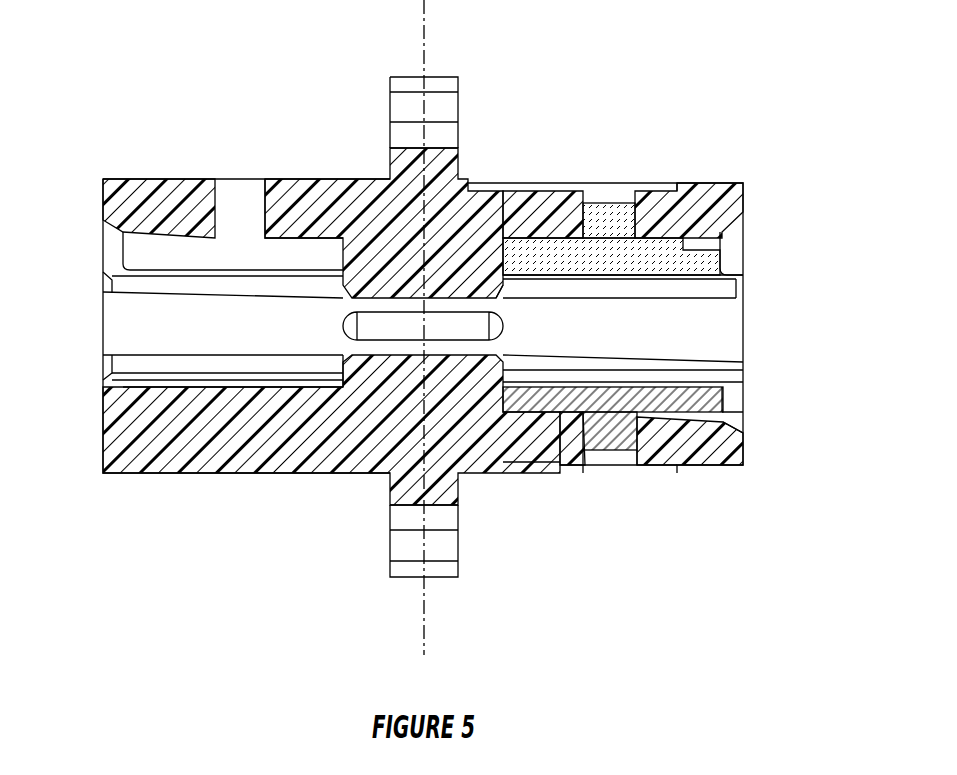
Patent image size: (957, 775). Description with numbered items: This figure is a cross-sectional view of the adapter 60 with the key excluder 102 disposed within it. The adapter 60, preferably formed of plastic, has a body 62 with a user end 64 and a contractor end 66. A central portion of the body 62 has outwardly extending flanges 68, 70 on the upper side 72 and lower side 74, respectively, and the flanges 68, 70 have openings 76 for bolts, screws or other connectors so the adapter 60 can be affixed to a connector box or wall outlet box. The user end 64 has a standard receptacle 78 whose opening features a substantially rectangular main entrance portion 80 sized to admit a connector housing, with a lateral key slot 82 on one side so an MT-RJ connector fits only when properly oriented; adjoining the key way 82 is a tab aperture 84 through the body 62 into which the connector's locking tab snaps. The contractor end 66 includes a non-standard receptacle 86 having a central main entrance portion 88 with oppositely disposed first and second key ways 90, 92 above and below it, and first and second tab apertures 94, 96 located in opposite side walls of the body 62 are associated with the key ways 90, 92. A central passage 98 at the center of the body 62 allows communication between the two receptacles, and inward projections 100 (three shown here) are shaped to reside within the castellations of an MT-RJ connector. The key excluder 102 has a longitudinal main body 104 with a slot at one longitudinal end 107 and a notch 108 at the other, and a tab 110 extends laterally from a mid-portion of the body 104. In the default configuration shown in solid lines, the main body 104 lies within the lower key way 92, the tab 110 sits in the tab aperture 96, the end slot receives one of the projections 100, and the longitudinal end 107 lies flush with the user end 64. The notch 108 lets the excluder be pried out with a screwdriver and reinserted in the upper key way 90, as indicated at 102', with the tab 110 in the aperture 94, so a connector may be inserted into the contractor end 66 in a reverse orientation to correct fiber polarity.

The adapter 60 is at (642, 90).
The body 62 is at (328, 178).
The user end 64 is at (92, 192).
The contractor end 66 is at (756, 192).
The flange 68 is at (460, 100).
The flange 70 is at (390, 548).
The upper side 72 is at (364, 178).
The lower side 74 is at (307, 474).
The openings 76 is at (432, 150).
The standard receptacle 78 is at (95, 320).
The main entrance portion 80 is at (115, 343).
The key slot 82 is at (140, 250).
The tab aperture 84 is at (222, 178).
The non-standard receptacle 86 is at (756, 326).
The main entrance portion 88 is at (728, 301).
The first key way 90 is at (735, 243).
The second key way 92 is at (733, 416).
The first tab aperture 94 is at (652, 190).
The second tab aperture 96 is at (618, 472).
The central passage 98 is at (462, 305).
The inward projections 100 is at (342, 327).
The key excluder 102 is at (666, 310).
The key excluder (reverse position) 102' is at (609, 132).
The main body 104 is at (558, 476).
The longitudinal end 107 is at (420, 398).
The notch 108 is at (745, 434).
The tab 110 is at (605, 455).